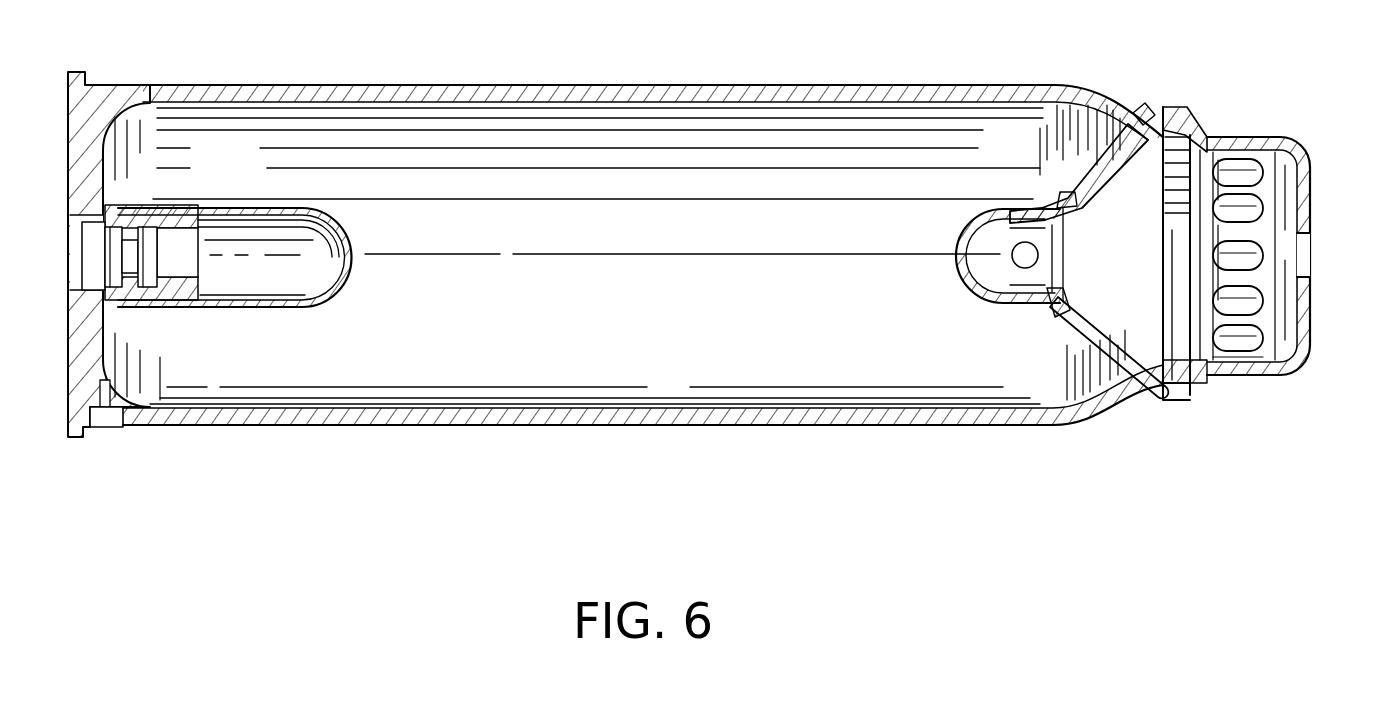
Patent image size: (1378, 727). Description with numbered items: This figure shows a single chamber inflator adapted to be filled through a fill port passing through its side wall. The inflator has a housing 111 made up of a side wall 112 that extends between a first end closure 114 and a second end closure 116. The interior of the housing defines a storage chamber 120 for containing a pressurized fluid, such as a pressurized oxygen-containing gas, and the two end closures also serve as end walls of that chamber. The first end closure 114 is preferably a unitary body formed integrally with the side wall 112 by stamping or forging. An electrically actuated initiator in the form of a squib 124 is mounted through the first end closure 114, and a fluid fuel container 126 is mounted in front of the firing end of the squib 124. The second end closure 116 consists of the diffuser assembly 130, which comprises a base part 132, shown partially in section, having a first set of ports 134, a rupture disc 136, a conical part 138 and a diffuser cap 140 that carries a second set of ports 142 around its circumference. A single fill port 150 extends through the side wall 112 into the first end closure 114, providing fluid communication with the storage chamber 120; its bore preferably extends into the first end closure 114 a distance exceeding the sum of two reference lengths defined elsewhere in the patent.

The housing 111 is at (537, 85).
The side wall 112 is at (760, 93).
The first end closure 114 is at (83, 163).
The second end closure 116 is at (1153, 107).
The storage chamber 120 is at (410, 142).
The squib 124 is at (182, 247).
The fluid fuel container 126 is at (333, 298).
The diffuser assembly 130 is at (1203, 150).
The base part 132 is at (960, 283).
The first set of ports 134 is at (1018, 220).
The rupture disc 136 is at (1050, 300).
The conical part 138 is at (1100, 350).
The diffuser cap 140 is at (1280, 210).
The second set of ports 142 is at (1247, 301).
The fill port 150 is at (110, 417).